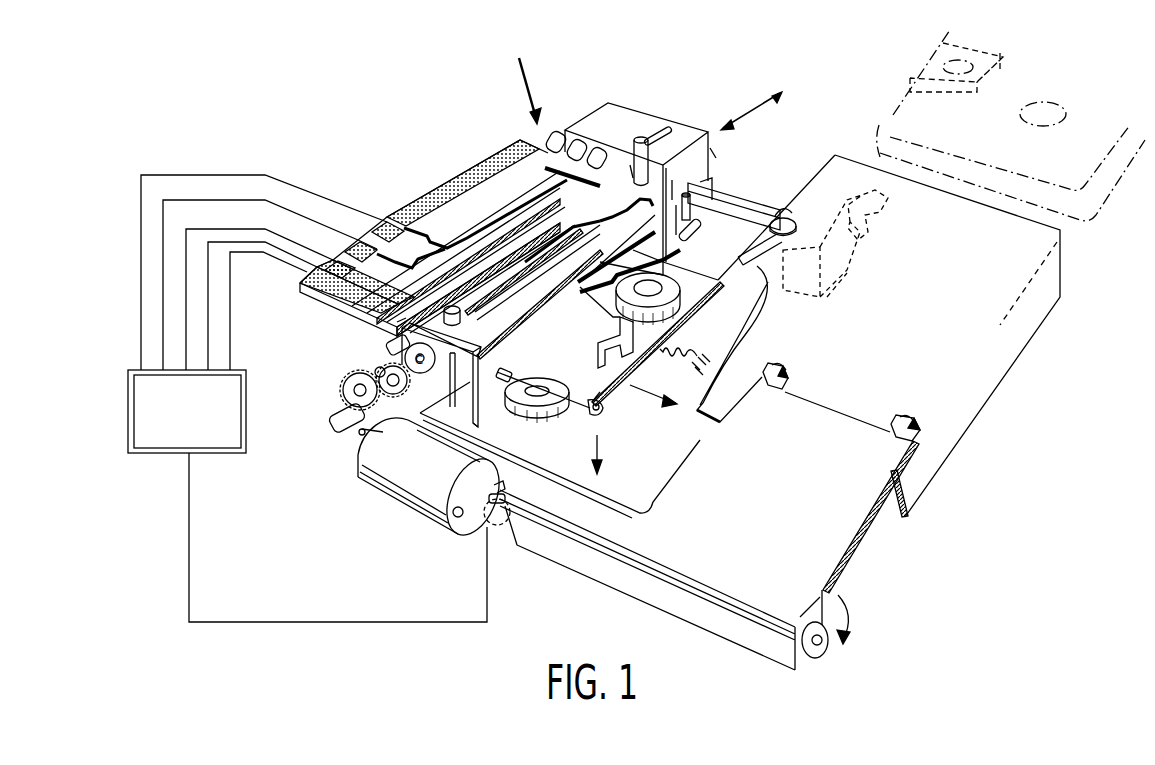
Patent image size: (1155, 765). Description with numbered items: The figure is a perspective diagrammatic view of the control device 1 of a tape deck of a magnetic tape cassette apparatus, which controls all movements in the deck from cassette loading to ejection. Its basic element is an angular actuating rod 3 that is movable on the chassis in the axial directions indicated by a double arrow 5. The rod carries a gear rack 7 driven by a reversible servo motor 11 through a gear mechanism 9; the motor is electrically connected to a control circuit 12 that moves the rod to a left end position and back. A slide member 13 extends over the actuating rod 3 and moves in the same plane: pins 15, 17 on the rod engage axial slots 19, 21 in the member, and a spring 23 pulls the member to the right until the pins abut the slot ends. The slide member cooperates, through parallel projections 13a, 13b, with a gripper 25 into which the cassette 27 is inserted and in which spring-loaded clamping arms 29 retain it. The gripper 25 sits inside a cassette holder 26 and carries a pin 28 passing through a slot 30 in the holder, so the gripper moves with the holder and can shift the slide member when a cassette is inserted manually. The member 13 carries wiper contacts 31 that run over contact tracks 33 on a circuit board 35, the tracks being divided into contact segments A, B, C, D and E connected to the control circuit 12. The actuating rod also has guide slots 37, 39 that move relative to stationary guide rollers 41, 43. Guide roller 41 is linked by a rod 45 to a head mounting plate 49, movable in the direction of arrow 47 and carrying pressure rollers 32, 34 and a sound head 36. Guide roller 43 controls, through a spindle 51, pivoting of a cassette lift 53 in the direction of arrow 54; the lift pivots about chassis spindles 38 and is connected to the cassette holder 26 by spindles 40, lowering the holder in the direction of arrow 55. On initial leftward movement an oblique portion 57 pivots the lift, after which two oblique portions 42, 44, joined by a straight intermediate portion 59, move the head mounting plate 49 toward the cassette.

The control device 1 is at (507, 56).
The actuating rod 3 is at (633, 168).
The double arrow 5 is at (757, 105).
The gear rack 7 is at (398, 327).
The gear mechanism 9 is at (391, 394).
The servo motor 11 is at (395, 502).
The control circuit 12 is at (220, 453).
The slide member 13 is at (648, 122).
The parallel projection 13a is at (682, 190).
The parallel projection 13b is at (715, 152).
The pin 15 is at (613, 266).
The pin 17 is at (641, 135).
The axial slot 19 is at (695, 238).
The axial slot 21 is at (672, 130).
The spring 23 is at (713, 190).
The gripper 25 is at (818, 300).
The cassette holder 26 is at (1032, 315).
The cassette 27 is at (940, 117).
The pin 28 is at (783, 215).
The clamping arms 29 is at (868, 236).
The slot 30 is at (758, 239).
The wiper contact 31 is at (540, 137).
The pressure roller 32 is at (533, 409).
The contact tracks 33 is at (490, 190).
The pressure roller 34 is at (680, 300).
The circuit board 35 is at (320, 300).
The sound head 36 is at (627, 357).
The guide slot 37 is at (517, 284).
The spindles 38 is at (498, 526).
The guide slot 39 is at (510, 341).
The spindles 40 is at (768, 387).
The guide roller 41 is at (465, 316).
The oblique portion 42 is at (602, 231).
The guide roller 43 is at (478, 384).
The oblique portion 44 is at (636, 205).
The rod 45 is at (449, 371).
The arrow 47 is at (668, 384).
The head mounting plate 49 is at (665, 320).
The spindle 51 is at (565, 393).
The cassette lift 53 is at (680, 495).
The arrow 54 is at (841, 596).
The arrow 55 is at (600, 447).
The oblique portion 57 is at (606, 327).
The straight intermediate portion 59 is at (605, 223).
The contact segment A is at (388, 221).
The contact segment B is at (359, 238).
The contact segment C is at (334, 258).
The contact segment D is at (318, 268).
The contact segment E is at (307, 272).